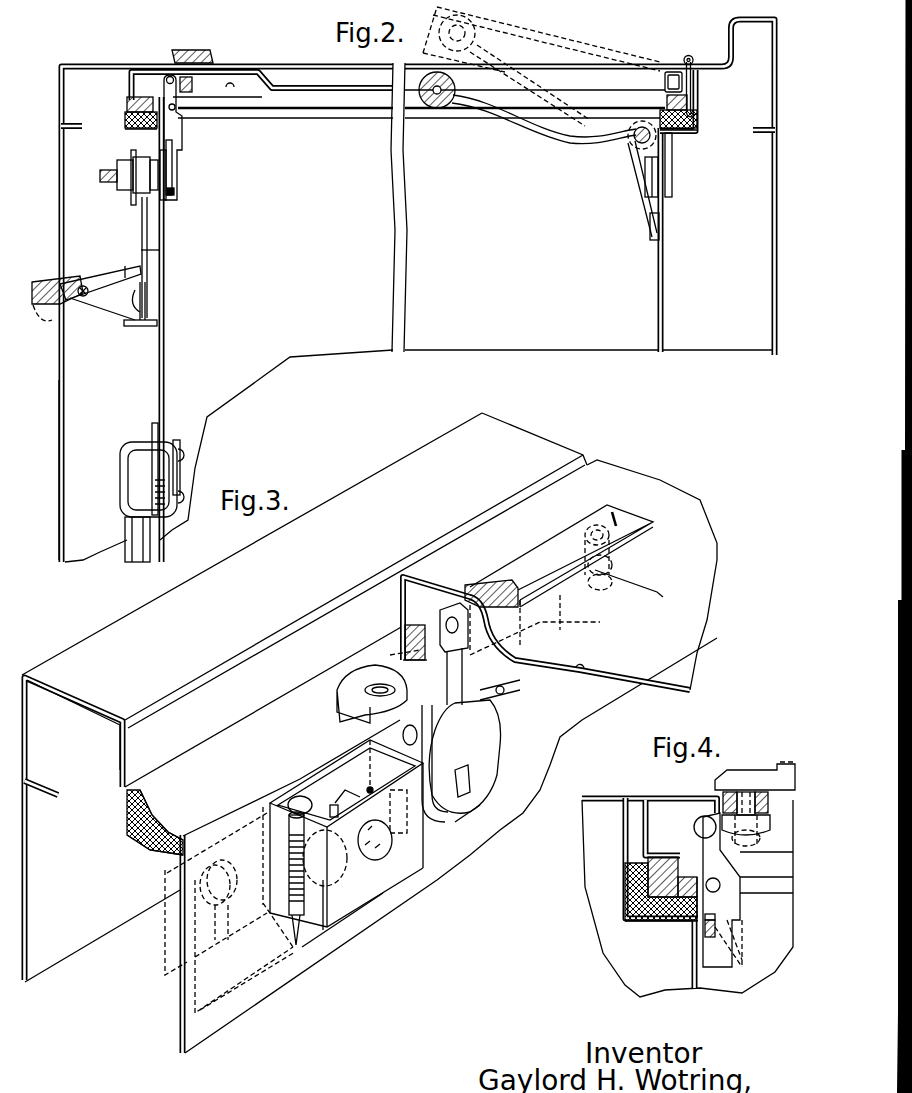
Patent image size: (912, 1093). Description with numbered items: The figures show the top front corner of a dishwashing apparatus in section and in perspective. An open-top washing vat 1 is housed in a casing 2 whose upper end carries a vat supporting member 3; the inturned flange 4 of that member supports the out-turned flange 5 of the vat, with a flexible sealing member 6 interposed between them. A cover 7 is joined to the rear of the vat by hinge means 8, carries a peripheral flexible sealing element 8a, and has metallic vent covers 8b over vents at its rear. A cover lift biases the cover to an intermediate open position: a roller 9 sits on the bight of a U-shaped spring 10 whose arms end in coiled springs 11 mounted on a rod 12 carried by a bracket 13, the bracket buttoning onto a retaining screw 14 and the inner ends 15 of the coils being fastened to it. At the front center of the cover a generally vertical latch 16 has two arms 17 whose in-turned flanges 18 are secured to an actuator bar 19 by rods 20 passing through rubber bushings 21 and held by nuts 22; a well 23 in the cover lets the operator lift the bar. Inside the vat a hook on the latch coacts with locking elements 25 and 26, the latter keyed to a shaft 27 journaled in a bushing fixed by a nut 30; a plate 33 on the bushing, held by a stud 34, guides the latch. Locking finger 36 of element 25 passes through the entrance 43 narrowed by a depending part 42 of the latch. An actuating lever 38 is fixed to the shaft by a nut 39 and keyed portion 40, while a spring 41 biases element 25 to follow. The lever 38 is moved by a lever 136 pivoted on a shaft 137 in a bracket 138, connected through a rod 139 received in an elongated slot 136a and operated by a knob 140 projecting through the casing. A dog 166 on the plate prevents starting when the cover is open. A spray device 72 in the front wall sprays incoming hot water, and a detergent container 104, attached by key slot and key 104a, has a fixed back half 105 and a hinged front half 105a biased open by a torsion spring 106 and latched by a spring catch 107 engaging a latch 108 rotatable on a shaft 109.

In FIG. 2, the washing vat 1 is at (158, 366).
In FIG. 3, the washing vat 1 is at (193, 1040).
In FIG. 4, the washing vat 1 is at (690, 955).
In FIG. 2, the casing 2 is at (58, 378).
In FIG. 3, the casing 2 is at (67, 952).
In FIG. 2, the vat supporting member 3 is at (57, 100).
In FIG. 3, the vat supporting member 3 is at (50, 660).
In FIG. 4, the vat supporting member 3 is at (605, 798).
In FIG. 2, the inturned flange 4 is at (690, 131).
In FIG. 3, the inturned flange 4 is at (140, 846).
In FIG. 4, the inturned flange 4 is at (636, 922).
In FIG. 2, the out-turned flange 5 is at (692, 116).
In FIG. 3, the out-turned flange 5 is at (165, 830).
In FIG. 4, the out-turned flange 5 is at (658, 920).
In FIG. 2, the flexible sealing member 6 is at (698, 122).
In FIG. 3, the flexible sealing member 6 is at (130, 826).
In FIG. 4, the flexible sealing member 6 is at (630, 898).
In FIG. 2, the cover 7 is at (302, 64).
In FIG. 3, the cover 7 is at (641, 672).
In FIG. 4, the cover 7 is at (664, 798).
In FIG. 2, the hinge means 8 is at (692, 60).
In FIG. 2, the peripheral flexible sealing element 8a is at (688, 102).
In FIG. 3, the peripheral flexible sealing element 8a is at (403, 638).
In FIG. 4, the peripheral flexible sealing element 8a is at (660, 857).
In FIG. 2, the metallic vent covers 8b is at (665, 84).
In FIG. 2, the roller 9 is at (430, 108).
In FIG. 2, the U-shaped spring 10 is at (527, 133).
In FIG. 2, the coiled springs 11 is at (636, 152).
In FIG. 2, the rod 12 is at (630, 138).
In FIG. 2, the bracket 13 is at (636, 168).
In FIG. 2, the retaining screw 14 is at (645, 192).
In FIG. 2, the inner ends of the coiled spring 15 is at (650, 230).
In FIG. 2, the latch 16 is at (182, 124).
In FIG. 3, the latch 16 is at (447, 605).
In FIG. 4, the latch 16 is at (740, 905).
In FIG. 3, the arms 17 is at (545, 624).
In FIG. 4, the arms 17 is at (700, 838).
In FIG. 3, the in-turned flanges 18 is at (618, 566).
In FIG. 4, the in-turned flanges 18 is at (770, 820).
In FIG. 2, the actuator bar 19 is at (190, 50).
In FIG. 3, the actuator bar 19 is at (522, 580).
In FIG. 4, the actuator bar 19 is at (745, 772).
In FIG. 3, the rods 20 is at (590, 528).
In FIG. 4, the rods 20 is at (740, 792).
In FIG. 3, the rubber bushings 21 is at (620, 548).
In FIG. 4, the rubber bushings 21 is at (722, 802).
In FIG. 3, the nuts 22 is at (610, 590).
In FIG. 4, the nuts 22 is at (752, 845).
In FIG. 2, the well 23 is at (233, 90).
In FIG. 3, the well 23 is at (582, 670).
In FIG. 2, the locking element 25 is at (176, 204).
In FIG. 3, the locking element 25 is at (428, 825).
In FIG. 2, the locking element 26 is at (178, 193).
In FIG. 3, the locking element 26 is at (468, 815).
In FIG. 2, the shaft 27 is at (110, 168).
In FIG. 3, the shaft 27 is at (472, 790).
In FIG. 2, the nut 30 is at (149, 205).
In FIG. 2, the plate 33 is at (191, 108).
In FIG. 3, the plate 33 is at (395, 655).
In FIG. 3, the stud 34 is at (402, 733).
In FIG. 4, the locking finger 36 is at (742, 945).
In FIG. 2, the actuating lever 38 is at (132, 206).
In FIG. 2, the nut 39 is at (125, 193).
In FIG. 2, the keyed portion 40 is at (102, 179).
In FIG. 3, the spring 41 is at (452, 828).
In FIG. 4, the part 42 is at (716, 928).
In FIG. 4, the entrance 43 is at (705, 926).
In FIG. 2, the spray device 72 is at (180, 463).
In FIG. 3, the detergent container 104 is at (288, 790).
In FIG. 3, the key slot and key 104a is at (330, 880).
In FIG. 3, the fixed back half 105 is at (330, 778).
In FIG. 3, the front half 105a is at (165, 975).
In FIG. 3, the torsion spring 106 is at (289, 860).
In FIG. 3, the spring catch 107 is at (368, 788).
In FIG. 3, the latch 108 is at (360, 797).
In FIG. 3, the shaft 109 is at (318, 808).
In FIG. 2, the lever 136 is at (107, 310).
In FIG. 2, the elongated slot 136a is at (146, 296).
In FIG. 2, the shaft 137 is at (85, 286).
In FIG. 2, the bracket 138 is at (125, 266).
In FIG. 2, the rod 139 is at (161, 250).
In FIG. 2, the operating knob 140 is at (40, 282).
In FIG. 3, the dog 166 is at (508, 681).